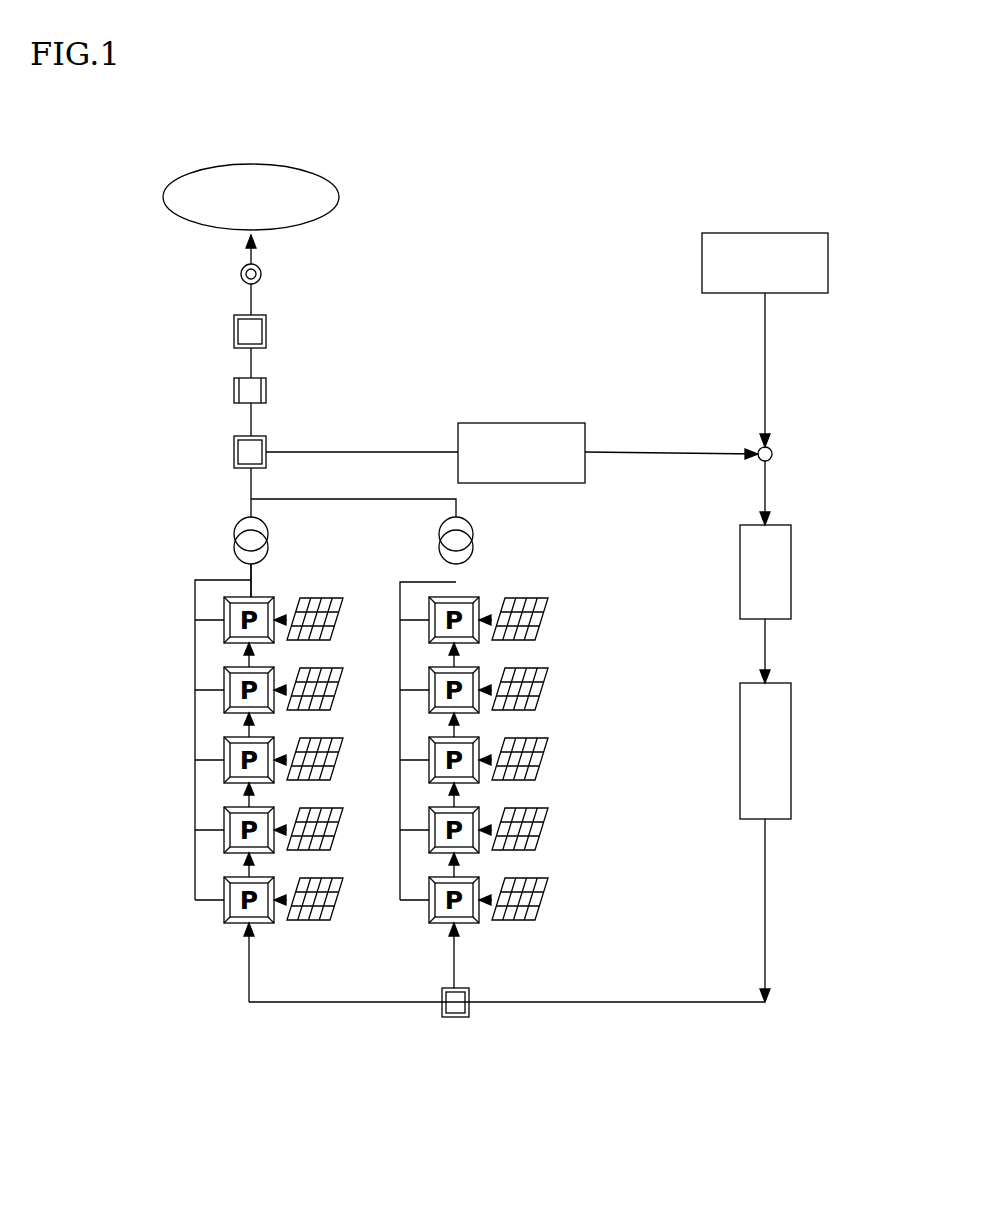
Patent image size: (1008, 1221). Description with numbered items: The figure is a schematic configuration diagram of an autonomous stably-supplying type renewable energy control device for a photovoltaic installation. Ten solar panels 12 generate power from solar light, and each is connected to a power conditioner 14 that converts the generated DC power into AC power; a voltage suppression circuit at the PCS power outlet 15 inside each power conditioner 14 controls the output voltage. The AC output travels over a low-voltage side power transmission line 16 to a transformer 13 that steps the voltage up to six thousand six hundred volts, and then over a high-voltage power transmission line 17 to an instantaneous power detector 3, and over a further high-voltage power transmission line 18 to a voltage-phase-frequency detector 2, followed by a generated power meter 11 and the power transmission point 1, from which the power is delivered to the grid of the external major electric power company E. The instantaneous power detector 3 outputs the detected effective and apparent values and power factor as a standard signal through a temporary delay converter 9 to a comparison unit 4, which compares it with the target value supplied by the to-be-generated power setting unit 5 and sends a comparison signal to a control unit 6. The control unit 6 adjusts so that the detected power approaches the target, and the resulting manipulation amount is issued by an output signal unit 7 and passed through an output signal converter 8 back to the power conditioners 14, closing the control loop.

The external major electric power company E is at (331, 197).
The power transmission point 1 is at (262, 274).
The voltage-phase-frequency detector 2 is at (234, 391).
The instantaneous power detector 3 is at (234, 453).
The comparison unit 4 is at (772, 458).
The to-be-generated power setting unit 5 is at (828, 262).
The control unit 6 is at (791, 619).
The output signal unit 7 is at (791, 819).
The output signal converter 8 is at (469, 1017).
The temporary delay converter 9 is at (585, 483).
The generated power meter 11 is at (266, 331).
The solar panel 12 is at (343, 601).
The transformer 13 is at (234, 536).
The power conditioner 14 is at (222, 612).
The PCS power outlet 15 is at (220, 622).
The low-voltage side power transmission line 16 is at (251, 578).
The high-voltage power transmission line 17 is at (251, 483).
The high-voltage power transmission line 18 is at (251, 418).